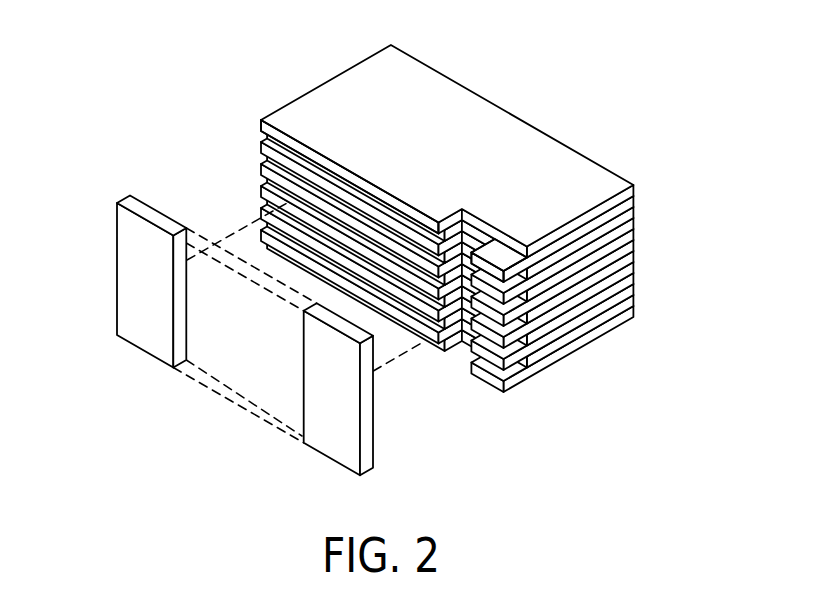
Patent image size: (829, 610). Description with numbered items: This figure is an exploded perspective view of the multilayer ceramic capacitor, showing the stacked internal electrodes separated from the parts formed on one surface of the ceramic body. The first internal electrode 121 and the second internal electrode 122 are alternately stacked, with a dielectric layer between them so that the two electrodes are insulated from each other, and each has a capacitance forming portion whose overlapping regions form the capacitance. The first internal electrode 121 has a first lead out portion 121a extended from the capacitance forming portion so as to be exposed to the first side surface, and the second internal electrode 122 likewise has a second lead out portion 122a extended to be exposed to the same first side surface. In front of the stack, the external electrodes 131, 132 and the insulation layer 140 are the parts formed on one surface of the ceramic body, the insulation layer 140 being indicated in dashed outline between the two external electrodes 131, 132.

The first internal electrode 121 is at (451, 117).
The first lead out portion 121a is at (290, 124).
The second internal electrode 122 is at (632, 207).
The second lead out portion 122a is at (500, 254).
The external electrode 131 is at (147, 312).
The external electrode 132 is at (335, 422).
The insulation layer 140 is at (230, 400).